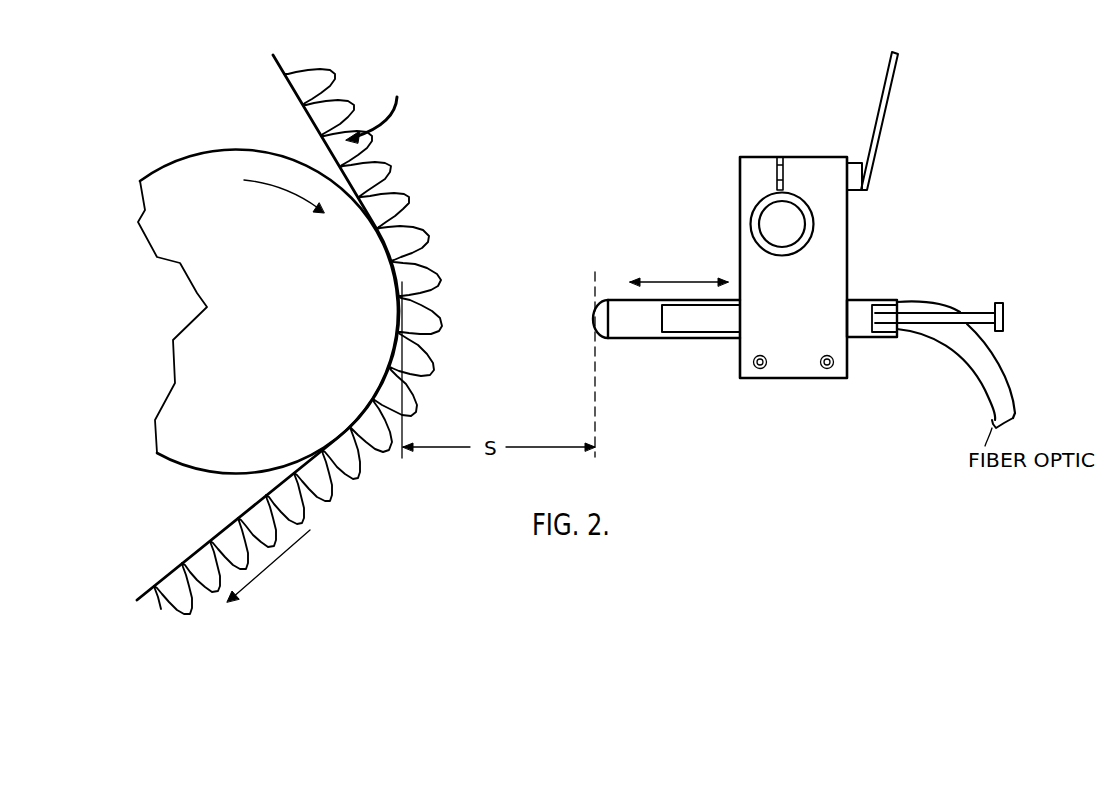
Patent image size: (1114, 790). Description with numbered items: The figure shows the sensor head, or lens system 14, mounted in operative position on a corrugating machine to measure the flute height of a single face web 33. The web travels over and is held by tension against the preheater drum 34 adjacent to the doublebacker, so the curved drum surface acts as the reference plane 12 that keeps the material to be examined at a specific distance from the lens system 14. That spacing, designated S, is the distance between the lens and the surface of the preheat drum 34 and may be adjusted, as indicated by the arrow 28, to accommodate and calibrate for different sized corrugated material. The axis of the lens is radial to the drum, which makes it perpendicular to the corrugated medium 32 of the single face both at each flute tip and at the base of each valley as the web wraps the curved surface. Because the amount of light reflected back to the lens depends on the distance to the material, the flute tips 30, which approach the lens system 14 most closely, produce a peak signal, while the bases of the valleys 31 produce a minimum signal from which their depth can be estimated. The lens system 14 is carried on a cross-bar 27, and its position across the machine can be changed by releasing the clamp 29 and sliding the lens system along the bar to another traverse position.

The reference plane 12 is at (247, 153).
The lens system 14 is at (648, 339).
The cross-bar 27 is at (805, 227).
The arrow 28 is at (665, 281).
The clamp 29 is at (872, 166).
The flute tips 30 is at (446, 290).
The valleys 31 is at (432, 266).
The corrugated material 32 is at (373, 178).
The single face web 33 is at (328, 35).
The preheater drum 34 is at (284, 280).